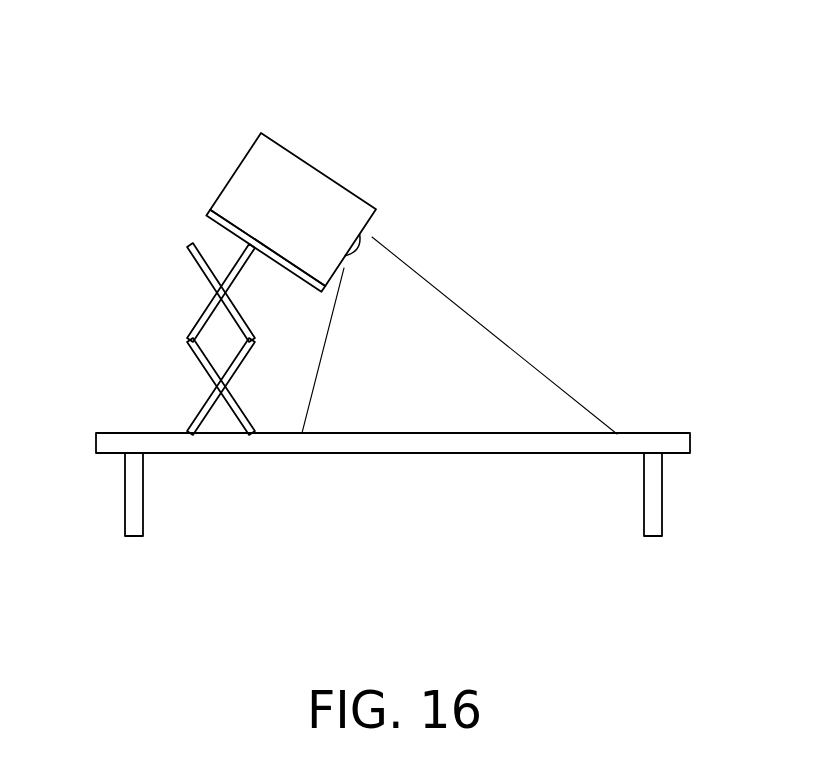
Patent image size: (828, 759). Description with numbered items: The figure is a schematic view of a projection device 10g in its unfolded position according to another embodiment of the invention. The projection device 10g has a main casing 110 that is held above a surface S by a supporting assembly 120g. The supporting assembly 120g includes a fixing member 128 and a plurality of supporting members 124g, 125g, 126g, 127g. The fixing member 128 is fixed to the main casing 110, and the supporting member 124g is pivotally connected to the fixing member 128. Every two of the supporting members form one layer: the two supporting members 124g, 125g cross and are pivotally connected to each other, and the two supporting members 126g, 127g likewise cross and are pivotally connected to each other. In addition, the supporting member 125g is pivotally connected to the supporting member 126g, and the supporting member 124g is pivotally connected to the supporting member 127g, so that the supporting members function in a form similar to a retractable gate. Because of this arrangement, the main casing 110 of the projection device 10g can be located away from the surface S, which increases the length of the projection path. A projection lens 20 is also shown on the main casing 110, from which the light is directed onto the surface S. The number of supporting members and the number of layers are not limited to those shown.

The projection device 10g is at (258, 235).
The main casing 110 is at (293, 168).
The fixing member 128 is at (210, 210).
The projection lens 20 is at (356, 254).
The supporting assembly 120g is at (171, 235).
The supporting member 124g is at (208, 313).
The supporting member 125g is at (242, 323).
The supporting member 126g is at (208, 400).
The supporting member 127g is at (253, 418).
The surface S is at (648, 434).